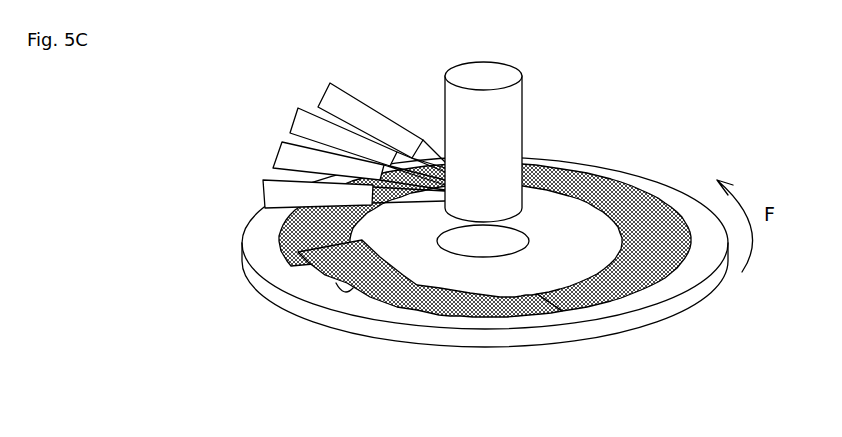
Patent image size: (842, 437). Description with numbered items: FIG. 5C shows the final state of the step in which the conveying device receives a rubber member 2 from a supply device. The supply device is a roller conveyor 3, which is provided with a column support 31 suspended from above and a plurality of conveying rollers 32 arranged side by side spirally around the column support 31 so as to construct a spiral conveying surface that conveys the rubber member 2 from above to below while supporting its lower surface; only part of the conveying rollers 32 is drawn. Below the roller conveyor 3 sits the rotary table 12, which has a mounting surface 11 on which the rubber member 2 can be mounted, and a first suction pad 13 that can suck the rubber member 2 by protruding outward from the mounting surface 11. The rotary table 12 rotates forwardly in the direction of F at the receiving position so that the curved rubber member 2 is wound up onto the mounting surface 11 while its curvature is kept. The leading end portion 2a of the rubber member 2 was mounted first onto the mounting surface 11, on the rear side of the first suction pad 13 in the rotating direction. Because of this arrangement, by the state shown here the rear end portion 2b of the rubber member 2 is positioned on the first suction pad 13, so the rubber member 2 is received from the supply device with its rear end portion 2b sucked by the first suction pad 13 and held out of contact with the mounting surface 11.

The rubber member 2 is at (582, 308).
The leading end portion 2a is at (287, 262).
The rear end portion 2b is at (313, 276).
The roller conveyor 3 is at (516, 135).
The column support 31 is at (523, 150).
The conveying rollers 32 is at (322, 96).
The mounting surface 11 is at (313, 287).
The rotary table 12 is at (313, 313).
The first suction pad 13 is at (336, 291).